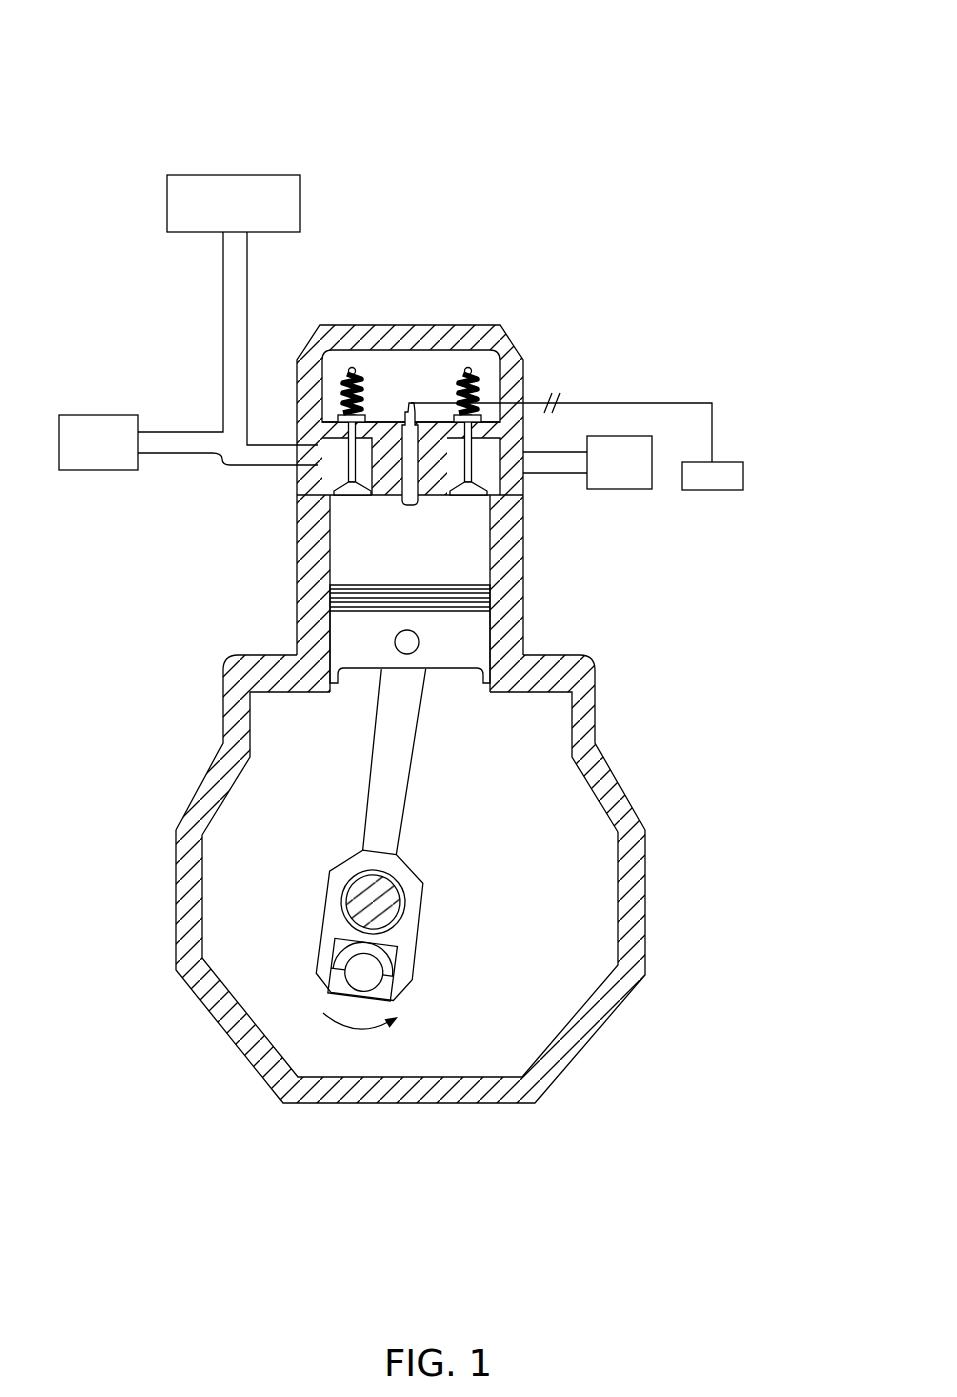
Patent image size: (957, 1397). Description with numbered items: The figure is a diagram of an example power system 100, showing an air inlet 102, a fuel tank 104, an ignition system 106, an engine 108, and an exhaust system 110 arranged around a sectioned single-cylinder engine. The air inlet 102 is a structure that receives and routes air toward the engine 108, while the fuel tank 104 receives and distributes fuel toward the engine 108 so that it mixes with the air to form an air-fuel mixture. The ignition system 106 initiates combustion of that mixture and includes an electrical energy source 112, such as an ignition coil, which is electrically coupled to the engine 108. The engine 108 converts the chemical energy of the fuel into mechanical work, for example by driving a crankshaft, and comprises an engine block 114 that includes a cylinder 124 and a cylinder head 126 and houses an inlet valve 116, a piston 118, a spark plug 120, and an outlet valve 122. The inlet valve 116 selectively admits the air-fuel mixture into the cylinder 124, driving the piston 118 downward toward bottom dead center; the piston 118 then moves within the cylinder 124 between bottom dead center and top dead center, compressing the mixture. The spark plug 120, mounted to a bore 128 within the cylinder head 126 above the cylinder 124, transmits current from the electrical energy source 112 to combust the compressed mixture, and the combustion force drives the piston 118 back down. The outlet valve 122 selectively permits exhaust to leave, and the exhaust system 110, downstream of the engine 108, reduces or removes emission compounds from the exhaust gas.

The power system 100 is at (105, 19).
The air inlet 102 is at (83, 459).
The fuel tank 104 is at (214, 215).
The ignition system 106 is at (712, 370).
The engine 108 is at (650, 935).
The exhaust system 110 is at (617, 492).
The electrical energy source 112 is at (728, 478).
The engine block 114 is at (612, 787).
The inlet valve 116 is at (352, 495).
The piston 118 is at (352, 632).
The spark plug 120 is at (410, 412).
The outlet valve 122 is at (470, 495).
The cylinder 124 is at (490, 577).
The cylinder head 126 is at (302, 483).
The bore 128 is at (397, 445).